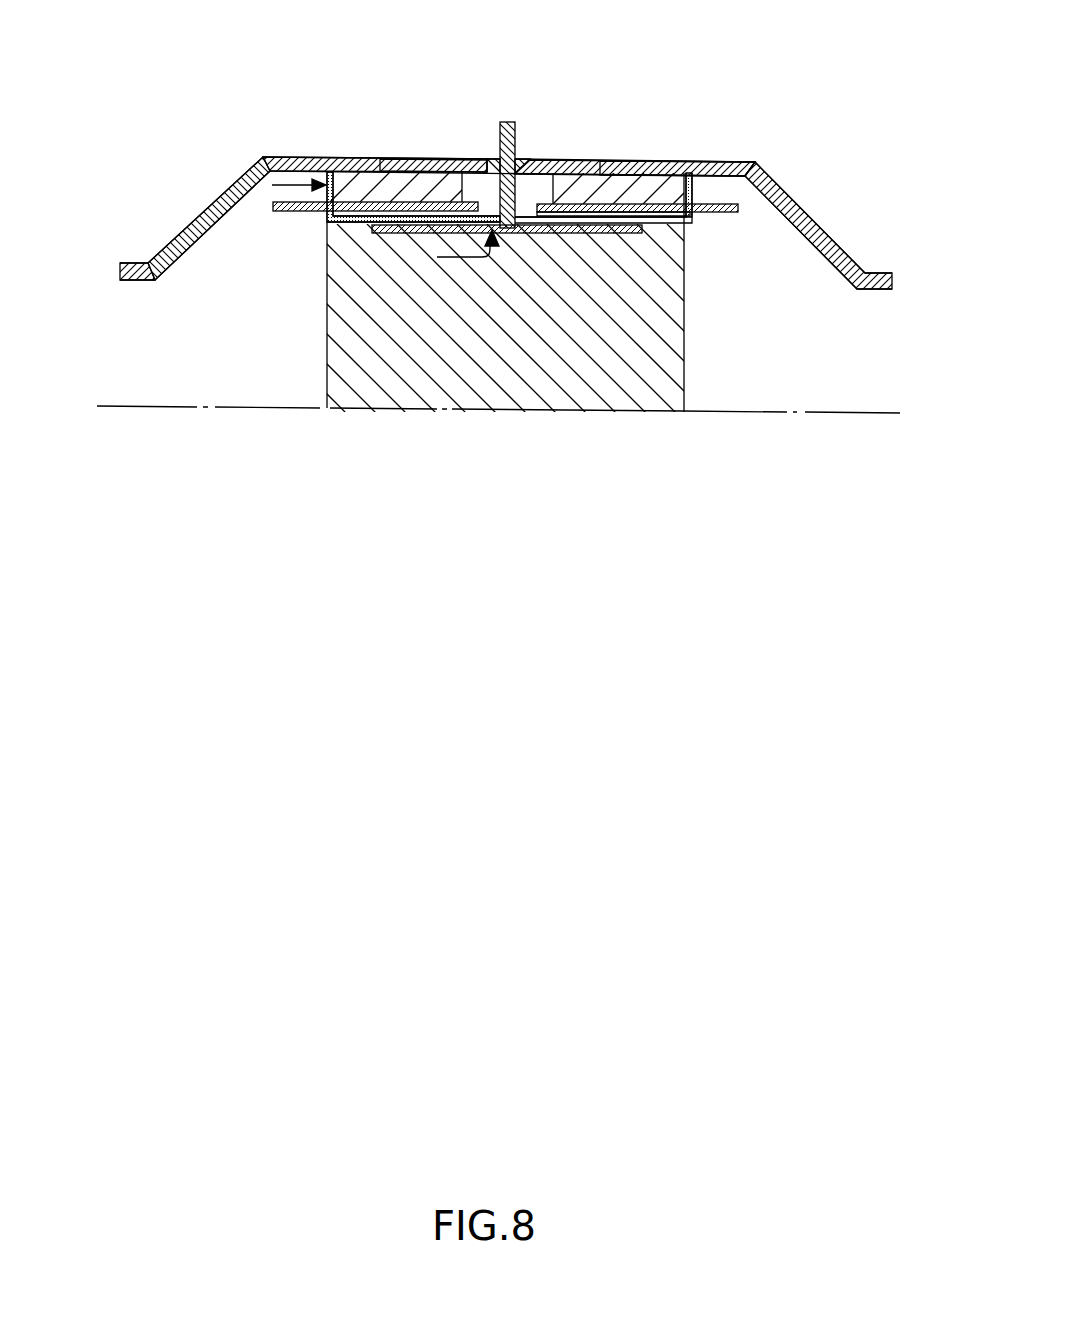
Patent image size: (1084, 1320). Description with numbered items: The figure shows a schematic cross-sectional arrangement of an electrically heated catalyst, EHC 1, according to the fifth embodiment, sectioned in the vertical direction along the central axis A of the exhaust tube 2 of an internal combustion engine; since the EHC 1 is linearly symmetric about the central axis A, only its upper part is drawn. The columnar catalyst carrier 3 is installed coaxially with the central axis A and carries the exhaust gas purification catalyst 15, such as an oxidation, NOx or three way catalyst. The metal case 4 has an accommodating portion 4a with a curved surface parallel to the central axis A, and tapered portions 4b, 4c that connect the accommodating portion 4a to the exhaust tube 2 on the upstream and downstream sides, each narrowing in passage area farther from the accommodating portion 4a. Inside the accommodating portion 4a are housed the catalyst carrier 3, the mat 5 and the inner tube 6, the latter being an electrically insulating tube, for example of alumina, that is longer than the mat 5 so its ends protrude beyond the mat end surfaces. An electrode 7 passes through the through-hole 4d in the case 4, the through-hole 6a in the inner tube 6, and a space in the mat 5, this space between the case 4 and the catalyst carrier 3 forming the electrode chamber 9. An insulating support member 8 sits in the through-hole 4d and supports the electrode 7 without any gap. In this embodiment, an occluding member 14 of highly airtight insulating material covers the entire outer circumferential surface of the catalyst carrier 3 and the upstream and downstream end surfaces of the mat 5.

The EHC 1 is at (788, 62).
The exhaust tube 2 is at (130, 262).
The catalyst carrier 3 is at (328, 333).
The case 4 is at (357, 157).
The accommodating portion 4a is at (668, 162).
The tapered portion 4b is at (210, 208).
The tapered portion 4c is at (808, 211).
The through-hole 4d is at (490, 172).
The mat 5 is at (690, 190).
The inner tube 6 is at (326, 215).
The through-hole 6a is at (528, 207).
The electrode 7 is at (510, 121).
The support member 8 is at (523, 158).
The electrode chamber 9 is at (460, 195).
The occluding member 14 is at (437, 222).
The exhaust gas purification catalyst 15 is at (657, 343).
The central axis A is at (808, 413).